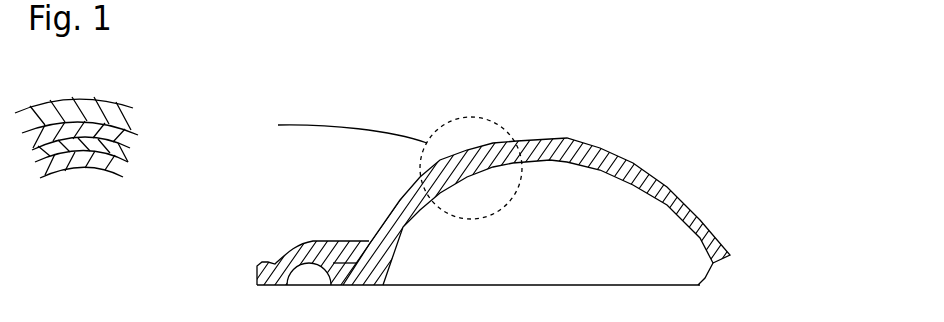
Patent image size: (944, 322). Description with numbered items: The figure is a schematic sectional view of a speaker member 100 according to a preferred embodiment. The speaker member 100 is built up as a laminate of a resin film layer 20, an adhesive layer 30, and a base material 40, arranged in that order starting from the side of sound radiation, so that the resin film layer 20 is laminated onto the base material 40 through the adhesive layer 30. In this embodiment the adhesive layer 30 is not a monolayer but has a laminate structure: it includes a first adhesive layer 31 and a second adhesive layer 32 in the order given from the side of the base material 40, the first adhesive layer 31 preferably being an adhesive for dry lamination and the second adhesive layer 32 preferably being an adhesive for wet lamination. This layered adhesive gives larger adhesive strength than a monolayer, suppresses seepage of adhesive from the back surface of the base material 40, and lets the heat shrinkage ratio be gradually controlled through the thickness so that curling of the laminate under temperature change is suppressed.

The speaker member 100 is at (735, 130).
The resin film layer 20 is at (128, 112).
The adhesive layer 30 is at (213, 124).
The second adhesive layer 32 is at (127, 140).
The first adhesive layer 31 is at (127, 157).
The base material 40 is at (122, 172).